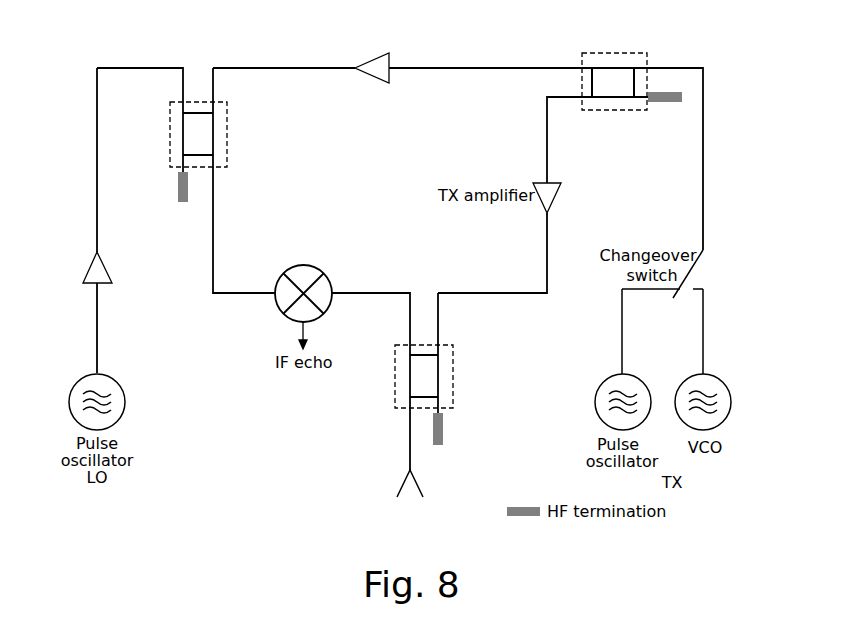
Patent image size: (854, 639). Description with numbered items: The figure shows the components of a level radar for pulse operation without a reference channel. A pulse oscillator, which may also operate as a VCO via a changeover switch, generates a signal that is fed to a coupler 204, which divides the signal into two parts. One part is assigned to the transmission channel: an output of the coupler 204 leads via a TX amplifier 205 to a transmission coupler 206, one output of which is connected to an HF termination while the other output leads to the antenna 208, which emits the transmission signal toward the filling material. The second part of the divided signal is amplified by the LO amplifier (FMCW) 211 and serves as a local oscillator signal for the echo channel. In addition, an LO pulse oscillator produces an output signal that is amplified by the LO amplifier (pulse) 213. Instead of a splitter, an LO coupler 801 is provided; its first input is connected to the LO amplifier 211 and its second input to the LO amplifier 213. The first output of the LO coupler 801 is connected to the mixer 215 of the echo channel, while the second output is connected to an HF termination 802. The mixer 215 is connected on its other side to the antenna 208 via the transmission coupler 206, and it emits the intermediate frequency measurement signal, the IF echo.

The LO coupler 801 is at (208, 143).
The HF termination 802 is at (180, 202).
The LO amplifier (FMCW) 211 is at (378, 77).
The LO amplifier (pulse) 213 is at (88, 283).
The mixer 215 is at (325, 283).
The coupler 204 is at (627, 70).
The TX amplifier 205 is at (552, 181).
The transmission coupler 206 is at (437, 380).
The antenna 208 is at (403, 487).